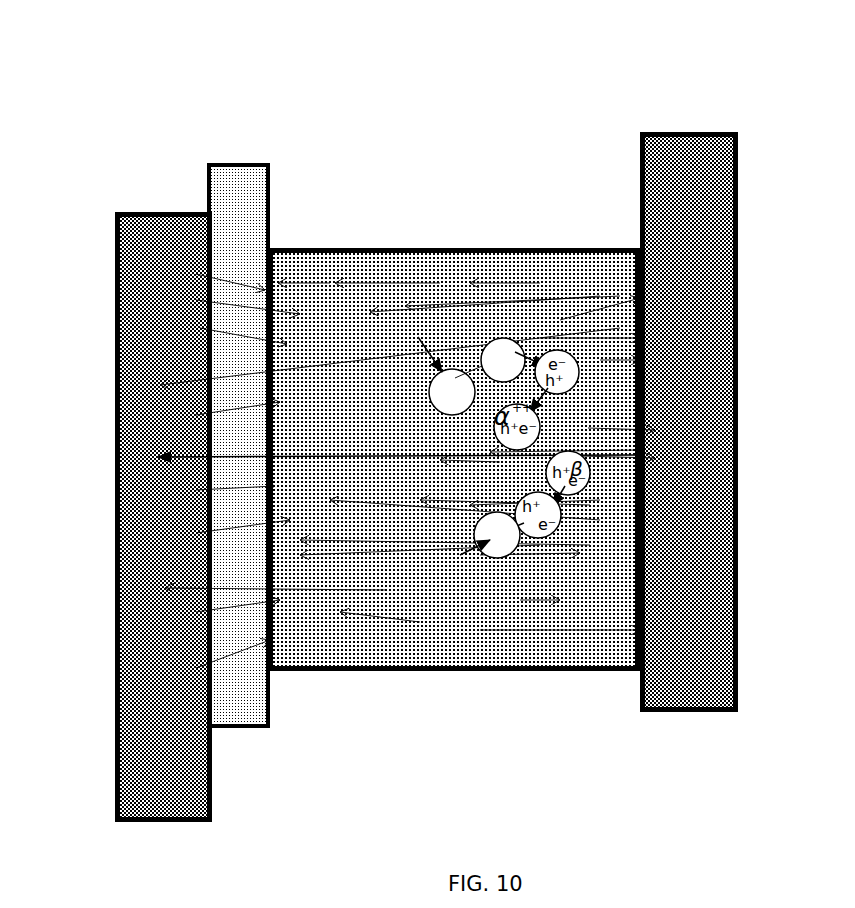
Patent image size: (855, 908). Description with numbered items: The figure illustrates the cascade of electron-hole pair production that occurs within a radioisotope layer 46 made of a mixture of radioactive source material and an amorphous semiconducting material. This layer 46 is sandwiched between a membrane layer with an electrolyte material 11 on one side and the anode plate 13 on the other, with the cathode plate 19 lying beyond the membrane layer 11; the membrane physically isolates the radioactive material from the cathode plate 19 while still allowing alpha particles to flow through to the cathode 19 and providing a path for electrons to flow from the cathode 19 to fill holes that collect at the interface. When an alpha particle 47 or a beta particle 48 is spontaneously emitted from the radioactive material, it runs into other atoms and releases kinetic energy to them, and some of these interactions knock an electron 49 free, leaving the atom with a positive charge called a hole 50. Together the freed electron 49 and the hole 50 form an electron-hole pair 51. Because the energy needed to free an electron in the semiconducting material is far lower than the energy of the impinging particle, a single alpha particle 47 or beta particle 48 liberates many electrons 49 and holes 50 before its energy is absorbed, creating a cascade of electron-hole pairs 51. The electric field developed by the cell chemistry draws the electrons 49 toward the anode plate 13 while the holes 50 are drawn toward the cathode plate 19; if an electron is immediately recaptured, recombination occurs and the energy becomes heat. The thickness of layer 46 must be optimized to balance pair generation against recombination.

The proton exchange membrane layer with an electrolyte material 11 is at (240, 160).
The anode plate 13 is at (688, 128).
The cathode plate 19 is at (163, 205).
The radioisotope layer 46 is at (443, 676).
The alpha particle 47 is at (404, 318).
The beta particle 48 is at (452, 574).
The electron 49 is at (503, 340).
The hole 50 is at (418, 640).
The electron-hole pair 51 is at (457, 364).